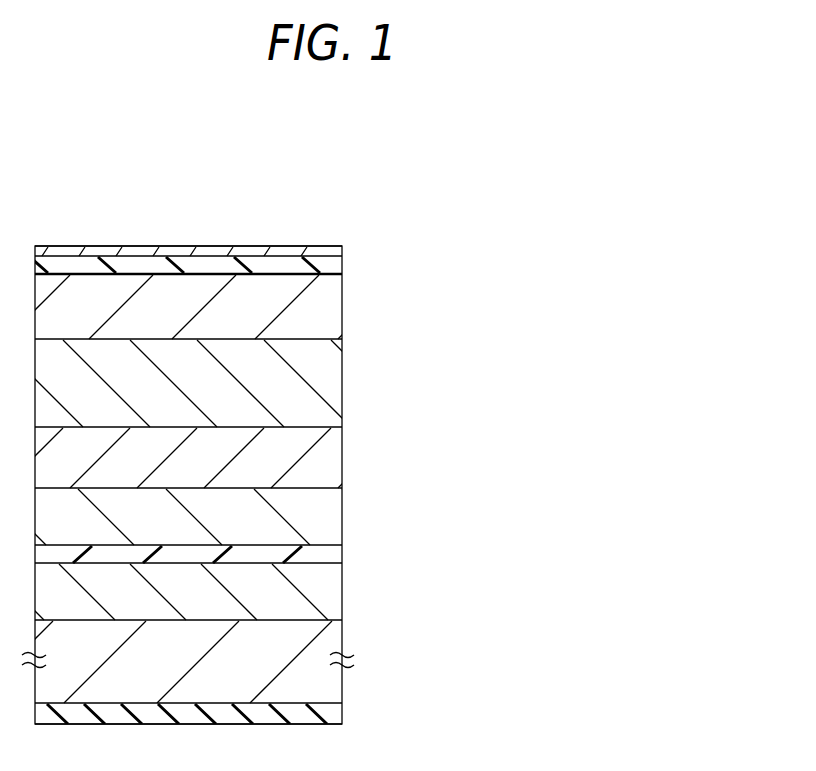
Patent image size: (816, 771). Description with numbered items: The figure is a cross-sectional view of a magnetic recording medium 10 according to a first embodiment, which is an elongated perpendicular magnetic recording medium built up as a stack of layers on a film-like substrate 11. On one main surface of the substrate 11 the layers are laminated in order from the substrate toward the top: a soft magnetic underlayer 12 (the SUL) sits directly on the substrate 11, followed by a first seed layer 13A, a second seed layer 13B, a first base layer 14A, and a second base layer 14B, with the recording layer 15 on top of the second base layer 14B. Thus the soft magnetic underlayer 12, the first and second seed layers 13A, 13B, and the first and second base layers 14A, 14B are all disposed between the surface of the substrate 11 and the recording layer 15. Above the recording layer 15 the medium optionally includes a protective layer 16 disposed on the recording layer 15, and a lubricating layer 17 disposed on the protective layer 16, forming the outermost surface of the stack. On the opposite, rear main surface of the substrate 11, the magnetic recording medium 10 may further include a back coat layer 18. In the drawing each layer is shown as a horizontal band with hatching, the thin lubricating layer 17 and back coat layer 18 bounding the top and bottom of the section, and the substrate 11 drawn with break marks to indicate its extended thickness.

The magnetic recording medium 10 is at (318, 161).
The substrate 11 is at (333, 637).
The soft magnetic underlayer 12 is at (333, 592).
The first seed layer 13A is at (333, 555).
The second seed layer 13B is at (333, 518).
The first base layer 14A is at (333, 458).
The second base layer 14B is at (333, 383).
The recording layer 15 is at (333, 306).
The protective layer 16 is at (333, 268).
The lubricating layer 17 is at (338, 253).
The back coat layer 18 is at (338, 715).